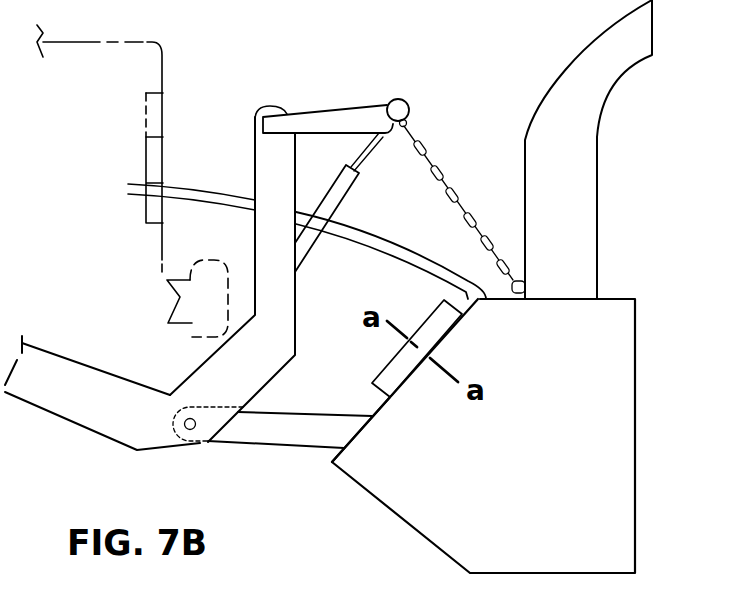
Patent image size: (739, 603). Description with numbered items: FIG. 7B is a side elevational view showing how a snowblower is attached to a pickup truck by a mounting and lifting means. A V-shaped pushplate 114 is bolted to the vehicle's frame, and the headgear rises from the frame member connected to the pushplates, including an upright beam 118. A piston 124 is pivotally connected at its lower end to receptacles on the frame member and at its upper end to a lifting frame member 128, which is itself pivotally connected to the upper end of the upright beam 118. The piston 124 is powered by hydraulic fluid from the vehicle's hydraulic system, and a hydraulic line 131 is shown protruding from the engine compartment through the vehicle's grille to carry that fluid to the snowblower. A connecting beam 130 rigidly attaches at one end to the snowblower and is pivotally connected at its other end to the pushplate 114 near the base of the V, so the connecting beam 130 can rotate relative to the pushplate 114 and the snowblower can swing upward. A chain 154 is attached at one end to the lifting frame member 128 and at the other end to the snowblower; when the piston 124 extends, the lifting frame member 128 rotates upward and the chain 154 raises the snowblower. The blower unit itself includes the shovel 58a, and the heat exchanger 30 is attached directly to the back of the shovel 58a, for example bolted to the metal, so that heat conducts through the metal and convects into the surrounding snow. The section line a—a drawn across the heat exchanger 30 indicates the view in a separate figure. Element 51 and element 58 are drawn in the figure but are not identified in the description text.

The heat exchanger 30 is at (378, 367).
The exhaust pipe 51 is at (587, 160).
The plate 58 is at (617, 440).
The shovel 58a is at (385, 425).
The pushplate 114 is at (108, 417).
The upright beam 118 is at (270, 173).
The piston 124 is at (345, 190).
The lifting frame member 128 is at (337, 117).
The connecting beam 130 is at (283, 437).
The hydraulic line 131 is at (398, 260).
The chain 154 is at (432, 157).